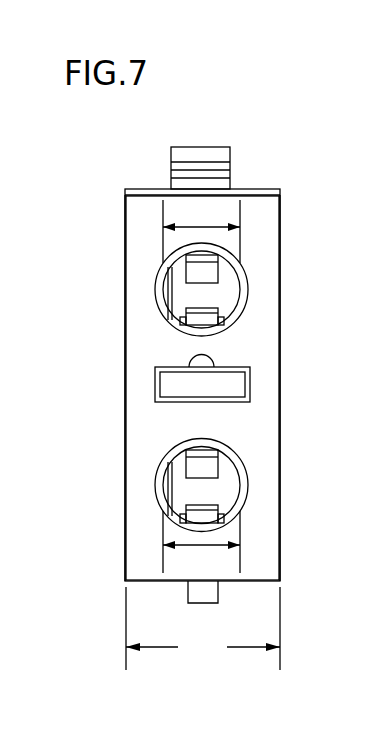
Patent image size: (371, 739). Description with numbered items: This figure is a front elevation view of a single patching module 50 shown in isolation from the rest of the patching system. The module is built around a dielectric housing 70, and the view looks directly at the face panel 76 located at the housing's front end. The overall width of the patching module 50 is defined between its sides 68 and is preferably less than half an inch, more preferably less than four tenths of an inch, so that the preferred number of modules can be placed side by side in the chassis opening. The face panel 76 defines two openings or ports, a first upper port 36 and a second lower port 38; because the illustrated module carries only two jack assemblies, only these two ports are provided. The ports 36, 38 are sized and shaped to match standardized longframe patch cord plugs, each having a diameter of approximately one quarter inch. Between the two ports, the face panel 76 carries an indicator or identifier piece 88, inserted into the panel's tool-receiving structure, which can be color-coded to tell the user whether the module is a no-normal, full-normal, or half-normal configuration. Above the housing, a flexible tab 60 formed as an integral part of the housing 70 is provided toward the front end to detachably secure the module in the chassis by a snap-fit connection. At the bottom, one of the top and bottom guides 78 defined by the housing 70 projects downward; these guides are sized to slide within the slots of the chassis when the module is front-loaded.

The patching module 50 is at (294, 136).
The flexible tab 60 is at (197, 150).
The dielectric housing 70 is at (290, 263).
The sides 68 is at (125, 398).
The face panel 76 is at (252, 423).
The first upper port 36 is at (165, 285).
The second lower port 38 is at (163, 492).
The indicator or identifier piece 88 is at (217, 385).
The top and bottom guides 78 is at (187, 595).